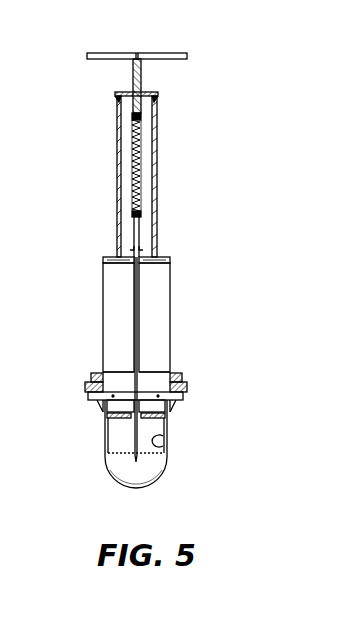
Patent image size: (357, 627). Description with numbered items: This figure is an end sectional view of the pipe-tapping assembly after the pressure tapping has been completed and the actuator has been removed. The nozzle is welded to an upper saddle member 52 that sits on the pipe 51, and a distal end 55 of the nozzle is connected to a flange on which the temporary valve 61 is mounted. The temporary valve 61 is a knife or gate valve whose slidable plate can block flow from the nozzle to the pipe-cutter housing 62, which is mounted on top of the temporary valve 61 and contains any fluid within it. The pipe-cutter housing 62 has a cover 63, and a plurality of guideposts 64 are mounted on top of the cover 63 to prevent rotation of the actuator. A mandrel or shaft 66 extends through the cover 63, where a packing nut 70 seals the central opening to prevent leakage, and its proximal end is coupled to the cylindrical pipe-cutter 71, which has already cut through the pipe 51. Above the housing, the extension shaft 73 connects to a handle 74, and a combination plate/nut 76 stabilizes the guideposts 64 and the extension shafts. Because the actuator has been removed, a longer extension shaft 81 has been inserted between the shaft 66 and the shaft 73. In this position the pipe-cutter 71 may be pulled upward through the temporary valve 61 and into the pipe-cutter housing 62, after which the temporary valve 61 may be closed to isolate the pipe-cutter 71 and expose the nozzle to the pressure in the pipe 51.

The pipe 51 is at (155, 483).
The upper saddle member 52 is at (105, 453).
The distal end of the nozzle 55 is at (170, 410).
The temporary valve 61 is at (103, 414).
The pipe-cutter housing 62 is at (170, 320).
The cover 63 is at (165, 256).
The guideposts 64 is at (157, 160).
The shaft 66 is at (132, 323).
The packing nut 70 is at (148, 240).
The pipe-cutter 71 is at (160, 442).
The extension shaft 73 is at (131, 79).
The handle 74 is at (162, 52).
The combination plate/nut 76 is at (132, 93).
The longer extension shaft 81 is at (133, 155).